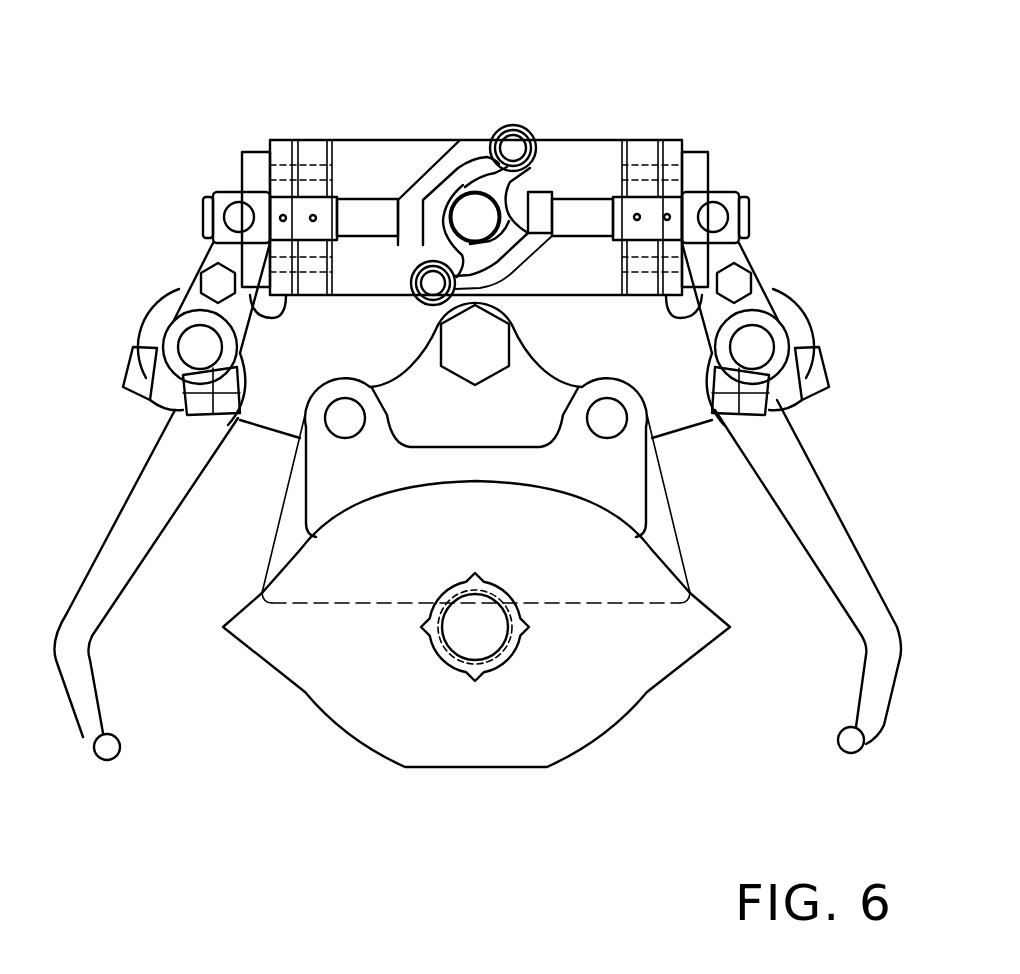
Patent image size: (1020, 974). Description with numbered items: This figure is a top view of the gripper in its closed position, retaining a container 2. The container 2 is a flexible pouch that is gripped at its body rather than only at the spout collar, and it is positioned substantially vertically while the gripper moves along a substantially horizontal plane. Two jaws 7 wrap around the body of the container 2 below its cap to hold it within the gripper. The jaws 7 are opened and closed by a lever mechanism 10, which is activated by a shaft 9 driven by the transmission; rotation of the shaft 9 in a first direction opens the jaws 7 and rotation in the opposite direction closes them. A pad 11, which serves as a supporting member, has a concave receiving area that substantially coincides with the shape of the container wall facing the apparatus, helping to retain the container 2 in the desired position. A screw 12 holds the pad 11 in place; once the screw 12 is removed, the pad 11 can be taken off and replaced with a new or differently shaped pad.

The container 2 is at (530, 753).
The jaw 7 is at (127, 528).
The shaft 9 is at (462, 212).
The lever mechanism 10 is at (740, 177).
The pad 11 is at (638, 502).
The screw 12 is at (485, 338).